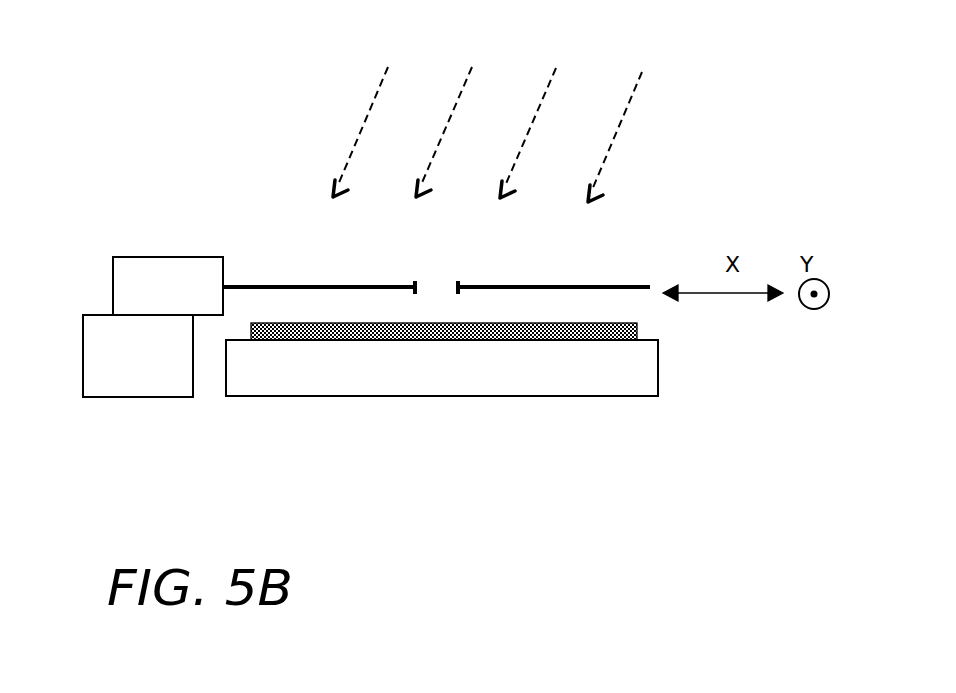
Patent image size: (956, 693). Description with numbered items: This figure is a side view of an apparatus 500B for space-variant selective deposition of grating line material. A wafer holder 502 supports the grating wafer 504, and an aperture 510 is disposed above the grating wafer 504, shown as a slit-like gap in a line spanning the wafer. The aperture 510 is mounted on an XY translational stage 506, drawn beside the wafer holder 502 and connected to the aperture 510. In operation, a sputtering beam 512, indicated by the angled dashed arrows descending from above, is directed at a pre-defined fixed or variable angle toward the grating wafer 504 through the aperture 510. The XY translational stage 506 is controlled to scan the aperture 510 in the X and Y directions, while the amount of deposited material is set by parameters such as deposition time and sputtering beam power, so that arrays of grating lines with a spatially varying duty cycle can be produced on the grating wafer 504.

The apparatus for space-variant selective deposition 500B is at (172, 112).
The wafer holder 502 is at (410, 397).
The grating wafer 504 is at (573, 340).
The XY translational stage 506 is at (163, 257).
The aperture 510 is at (525, 286).
The sputtering beam 512 is at (612, 150).